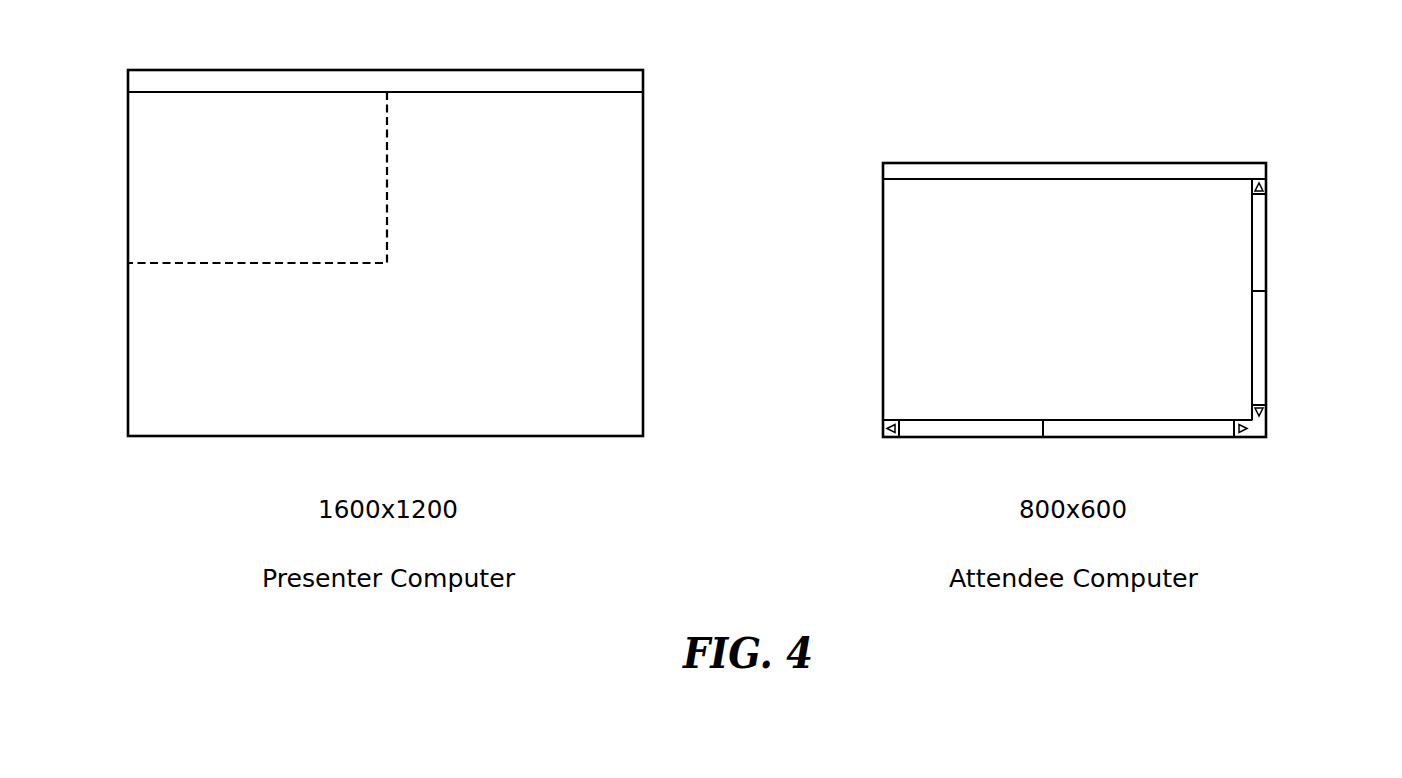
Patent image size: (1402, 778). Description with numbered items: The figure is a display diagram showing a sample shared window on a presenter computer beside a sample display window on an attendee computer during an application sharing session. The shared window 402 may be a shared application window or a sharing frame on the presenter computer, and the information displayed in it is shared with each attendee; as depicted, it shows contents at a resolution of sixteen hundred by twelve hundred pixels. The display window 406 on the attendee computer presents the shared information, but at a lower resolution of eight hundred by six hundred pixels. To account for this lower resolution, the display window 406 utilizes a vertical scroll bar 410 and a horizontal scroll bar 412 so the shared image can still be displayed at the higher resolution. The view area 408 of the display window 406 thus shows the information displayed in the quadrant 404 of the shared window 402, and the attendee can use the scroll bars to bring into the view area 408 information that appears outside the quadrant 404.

The shared window 402 is at (495, 77).
The quadrant 404 is at (152, 188).
The display window 406 is at (1163, 170).
The view area 408 is at (975, 210).
The vertical scroll bar 410 is at (1267, 258).
The horizontal scroll bar 412 is at (943, 427).